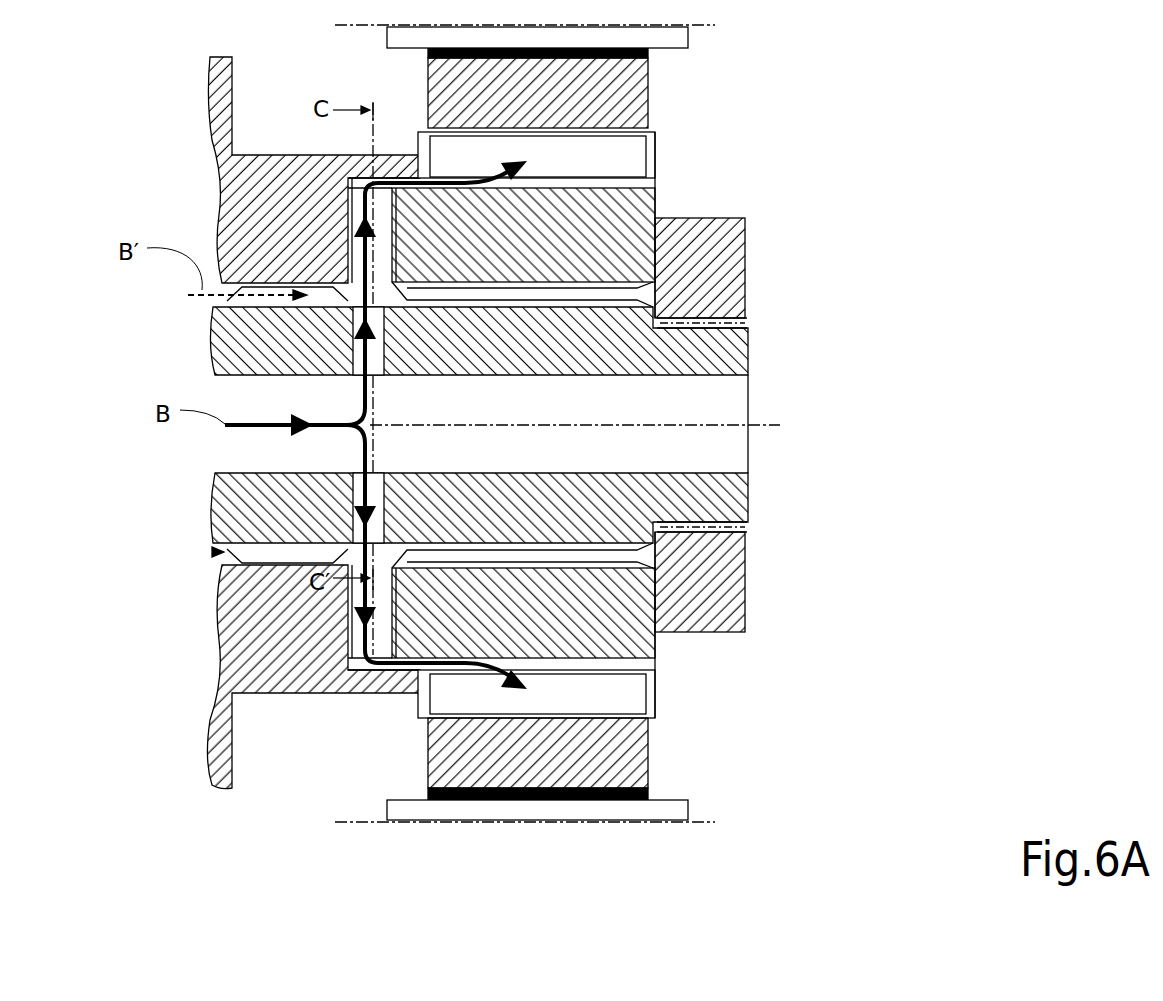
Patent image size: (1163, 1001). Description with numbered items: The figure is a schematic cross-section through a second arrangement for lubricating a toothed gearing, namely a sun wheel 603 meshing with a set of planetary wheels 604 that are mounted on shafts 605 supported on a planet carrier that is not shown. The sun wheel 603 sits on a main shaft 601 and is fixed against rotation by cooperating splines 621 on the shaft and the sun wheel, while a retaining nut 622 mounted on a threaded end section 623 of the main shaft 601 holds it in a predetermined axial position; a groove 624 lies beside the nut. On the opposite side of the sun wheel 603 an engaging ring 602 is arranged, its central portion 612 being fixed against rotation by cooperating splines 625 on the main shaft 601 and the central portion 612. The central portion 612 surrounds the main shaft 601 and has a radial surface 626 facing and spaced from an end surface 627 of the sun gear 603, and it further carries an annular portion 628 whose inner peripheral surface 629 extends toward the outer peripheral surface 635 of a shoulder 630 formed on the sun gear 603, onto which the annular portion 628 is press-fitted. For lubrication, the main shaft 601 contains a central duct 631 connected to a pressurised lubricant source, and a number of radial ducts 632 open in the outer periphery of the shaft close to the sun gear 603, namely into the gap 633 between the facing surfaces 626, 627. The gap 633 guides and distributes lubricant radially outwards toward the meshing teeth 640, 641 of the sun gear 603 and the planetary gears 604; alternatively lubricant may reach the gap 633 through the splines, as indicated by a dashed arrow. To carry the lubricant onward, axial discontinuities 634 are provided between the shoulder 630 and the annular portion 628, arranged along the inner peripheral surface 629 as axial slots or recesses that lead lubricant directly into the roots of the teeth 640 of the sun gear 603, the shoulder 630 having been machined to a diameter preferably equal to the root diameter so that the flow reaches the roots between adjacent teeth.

The main shaft 601 is at (190, 335).
The engaging ring 602 is at (212, 90).
The sun wheel 603 is at (666, 199).
The planetary wheels 604 is at (660, 88).
The shafts 605 is at (675, 38).
The central portion 612 is at (220, 185).
The cooperating splines 621 is at (638, 554).
The retaining nut 622 is at (757, 258).
The threaded end section 623 is at (740, 343).
The groove 624 is at (757, 318).
The cooperating splines 625 is at (212, 552).
The radial surface 626 is at (347, 613).
The end surface 627 is at (336, 650).
The annular portion 628 is at (345, 660).
The inner peripheral surface 629 is at (340, 660).
The shoulder 630 is at (415, 180).
The central duct 631 is at (236, 449).
The radial ducts 632 is at (338, 331).
The gap 633 is at (350, 258).
The axial discontinuities 634 is at (394, 680).
The outer peripheral surface 635 is at (410, 690).
The teeth 640 is at (660, 162).
The teeth 641 is at (627, 147).